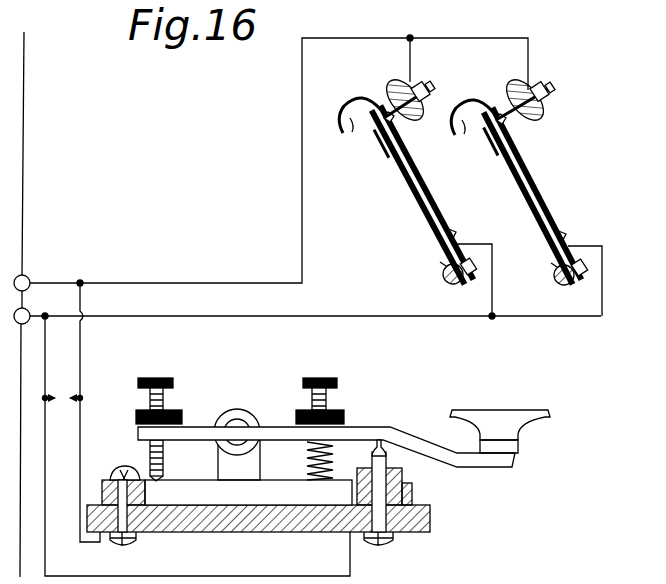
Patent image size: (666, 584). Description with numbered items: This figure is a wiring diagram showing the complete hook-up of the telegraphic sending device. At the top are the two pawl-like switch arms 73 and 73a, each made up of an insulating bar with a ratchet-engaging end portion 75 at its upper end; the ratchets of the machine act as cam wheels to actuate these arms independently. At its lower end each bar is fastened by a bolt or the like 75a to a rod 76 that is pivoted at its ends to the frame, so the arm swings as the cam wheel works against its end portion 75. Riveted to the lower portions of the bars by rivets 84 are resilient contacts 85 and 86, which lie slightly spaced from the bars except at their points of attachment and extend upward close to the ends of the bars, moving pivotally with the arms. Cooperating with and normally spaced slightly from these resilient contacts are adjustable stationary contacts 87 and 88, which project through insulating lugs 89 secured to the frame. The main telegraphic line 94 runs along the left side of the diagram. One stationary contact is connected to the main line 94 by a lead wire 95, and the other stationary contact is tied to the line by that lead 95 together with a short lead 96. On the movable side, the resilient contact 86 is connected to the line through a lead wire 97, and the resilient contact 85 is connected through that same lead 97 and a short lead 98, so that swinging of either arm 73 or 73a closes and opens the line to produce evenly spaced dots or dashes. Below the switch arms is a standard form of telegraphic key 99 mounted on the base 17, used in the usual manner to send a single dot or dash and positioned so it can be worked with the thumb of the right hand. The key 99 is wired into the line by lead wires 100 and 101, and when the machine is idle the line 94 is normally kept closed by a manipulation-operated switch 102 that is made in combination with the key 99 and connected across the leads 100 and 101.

The base 17 is at (432, 520).
The pawl-like switch arm 73 is at (411, 203).
The pawl-like switch arm 73a is at (522, 195).
The ratchet-engaging end portion 75 is at (349, 131).
The bolt 75a is at (449, 280).
The rod 76 is at (455, 286).
The rivet 84 is at (450, 236).
The resilient contact 85 is at (428, 186).
The resilient contact 86 is at (533, 190).
The adjustable stationary contact 87 is at (431, 84).
The adjustable stationary contact 88 is at (551, 88).
The insulating lug 89 is at (398, 80).
The main telegraphic line 94 is at (30, 180).
The lead wire 95 is at (298, 214).
The short lead 96 is at (410, 66).
The lead wire 97 is at (278, 318).
The short lead 98 is at (493, 286).
The telegraphic key 99 is at (383, 427).
The lead wire 100 is at (45, 558).
The lead wire 101 is at (80, 440).
The manipulation-operated switch 102 is at (60, 396).